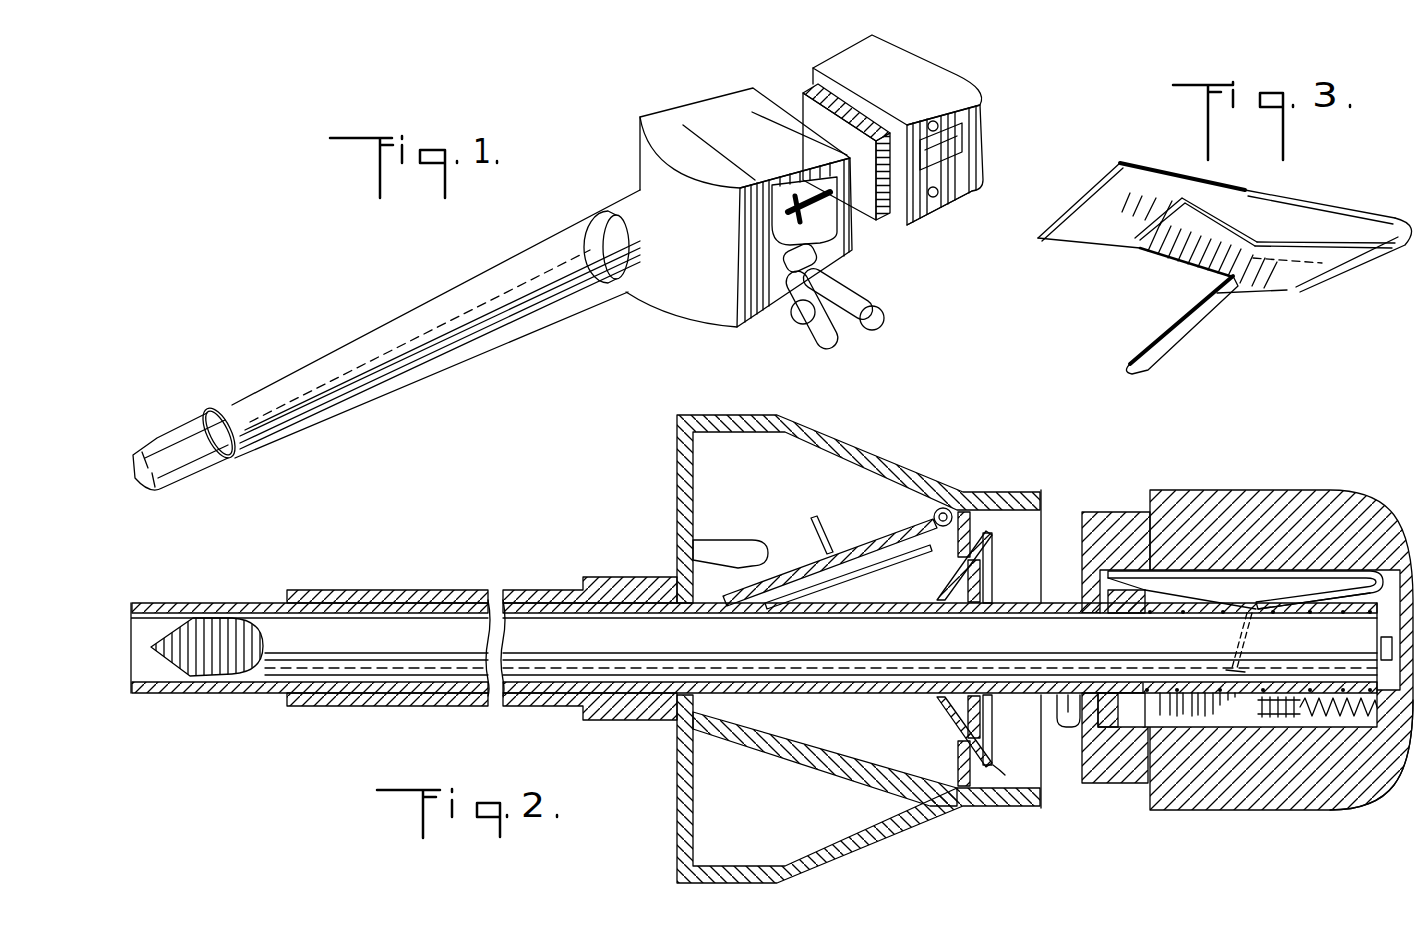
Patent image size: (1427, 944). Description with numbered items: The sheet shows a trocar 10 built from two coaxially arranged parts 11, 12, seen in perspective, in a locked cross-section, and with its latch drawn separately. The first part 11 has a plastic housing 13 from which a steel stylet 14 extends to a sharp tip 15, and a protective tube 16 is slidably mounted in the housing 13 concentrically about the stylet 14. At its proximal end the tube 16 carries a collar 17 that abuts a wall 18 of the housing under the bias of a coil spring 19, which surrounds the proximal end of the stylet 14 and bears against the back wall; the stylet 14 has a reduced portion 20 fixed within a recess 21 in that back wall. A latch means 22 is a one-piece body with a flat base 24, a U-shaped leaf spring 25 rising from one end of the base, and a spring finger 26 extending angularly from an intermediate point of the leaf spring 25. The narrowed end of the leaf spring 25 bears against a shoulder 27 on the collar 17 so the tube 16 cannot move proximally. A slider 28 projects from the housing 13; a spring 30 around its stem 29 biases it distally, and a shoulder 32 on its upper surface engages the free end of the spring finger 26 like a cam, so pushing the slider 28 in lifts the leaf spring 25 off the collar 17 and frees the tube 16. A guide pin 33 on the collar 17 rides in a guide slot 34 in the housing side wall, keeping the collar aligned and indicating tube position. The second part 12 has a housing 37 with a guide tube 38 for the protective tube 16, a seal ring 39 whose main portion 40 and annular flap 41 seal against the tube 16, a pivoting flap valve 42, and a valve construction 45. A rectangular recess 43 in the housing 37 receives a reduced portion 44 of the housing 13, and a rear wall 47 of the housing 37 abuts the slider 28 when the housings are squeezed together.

In FIG. 1, the trocar 10 is at (396, 274).
In FIG. 1, the trocar part 11 is at (812, 55).
In FIG. 1, the trocar part 12 is at (662, 102).
In FIG. 1, the housing 13 is at (935, 144).
In FIG. 2, the housing 13 is at (1231, 638).
In FIG. 2, the stylet 14 is at (542, 660).
In FIG. 2, the sharp tip 15 is at (205, 657).
In FIG. 2, the protective tube 16 is at (255, 603).
In FIG. 2, the collar 17 is at (1130, 704).
In FIG. 2, the wall 18 is at (1124, 572).
In FIG. 2, the coil spring 19 is at (1193, 588).
In FIG. 2, the reduced portion 20 is at (1380, 650).
In FIG. 2, the recess 21 is at (1389, 673).
In FIG. 3, the latch means 22 is at (1225, 256).
In FIG. 2, the latch means 22 is at (1264, 593).
In FIG. 3, the flat base 24 is at (1222, 188).
In FIG. 3, the leaf spring 25 is at (1287, 277).
In FIG. 2, the leaf spring 25 is at (1284, 600).
In FIG. 3, the spring finger 26 is at (1175, 343).
In FIG. 2, the spring finger 26 is at (1250, 650).
In FIG. 2, the shoulder 27 is at (1160, 574).
In FIG. 2, the slider 28 is at (1067, 730).
In FIG. 2, the stem 29 is at (1279, 727).
In FIG. 2, the spring 30 is at (1338, 727).
In FIG. 2, the shoulder 32 is at (1208, 676).
In FIG. 1, the guide pin 33 is at (913, 217).
In FIG. 1, the guide slot 34 is at (957, 148).
In FIG. 1, the housing 37 is at (705, 303).
In FIG. 2, the housing 37 is at (678, 455).
In FIG. 2, the guide tube 38 is at (450, 590).
In FIG. 2, the seal ring 39 is at (1003, 733).
In FIG. 2, the main portion 40 is at (985, 598).
In FIG. 2, the annular flap 41 is at (950, 598).
In FIG. 2, the flap valve 42 is at (868, 537).
In FIG. 2, the rectangular recess 43 is at (1043, 518).
In FIG. 1, the reduced portion 44 is at (885, 218).
In FIG. 2, the reduced portion 44 is at (1110, 513).
In FIG. 1, the valve construction 45 is at (863, 292).
In FIG. 2, the rear wall 47 is at (997, 790).